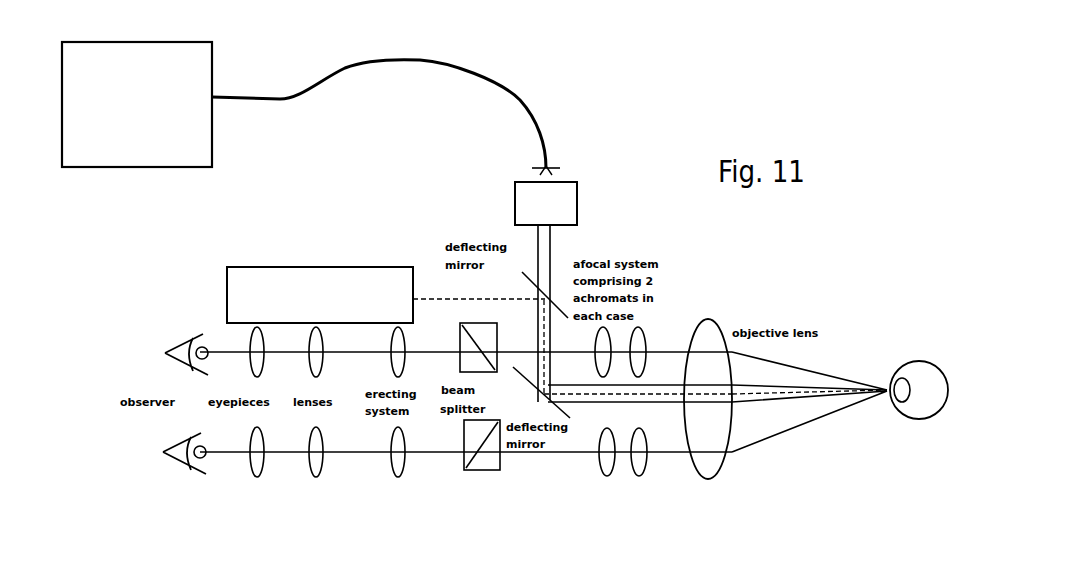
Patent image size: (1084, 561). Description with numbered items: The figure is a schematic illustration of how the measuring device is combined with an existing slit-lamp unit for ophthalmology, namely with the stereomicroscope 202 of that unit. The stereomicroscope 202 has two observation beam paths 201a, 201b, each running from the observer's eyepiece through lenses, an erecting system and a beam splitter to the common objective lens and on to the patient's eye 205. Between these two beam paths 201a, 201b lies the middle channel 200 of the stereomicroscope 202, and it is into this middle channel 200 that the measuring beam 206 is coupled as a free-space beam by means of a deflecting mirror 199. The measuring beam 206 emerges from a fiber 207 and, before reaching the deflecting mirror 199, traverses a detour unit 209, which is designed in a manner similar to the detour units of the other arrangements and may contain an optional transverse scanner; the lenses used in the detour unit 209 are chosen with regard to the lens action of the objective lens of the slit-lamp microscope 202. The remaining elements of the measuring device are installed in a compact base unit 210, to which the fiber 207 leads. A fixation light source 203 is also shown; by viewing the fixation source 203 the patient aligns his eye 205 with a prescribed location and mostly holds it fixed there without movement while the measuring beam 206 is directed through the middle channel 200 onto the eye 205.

The compact base unit 210 is at (152, 124).
The fiber 207 is at (478, 76).
The measuring beam 206 is at (554, 177).
The detour unit 209 is at (529, 218).
The fixation light source 203 is at (332, 310).
The beam path 201b is at (452, 347).
The beam path 201a is at (440, 462).
The deflecting mirror 199 is at (534, 392).
The middle channel 200 is at (663, 410).
The stereomicroscope 202 is at (344, 503).
The eye 205 is at (916, 430).